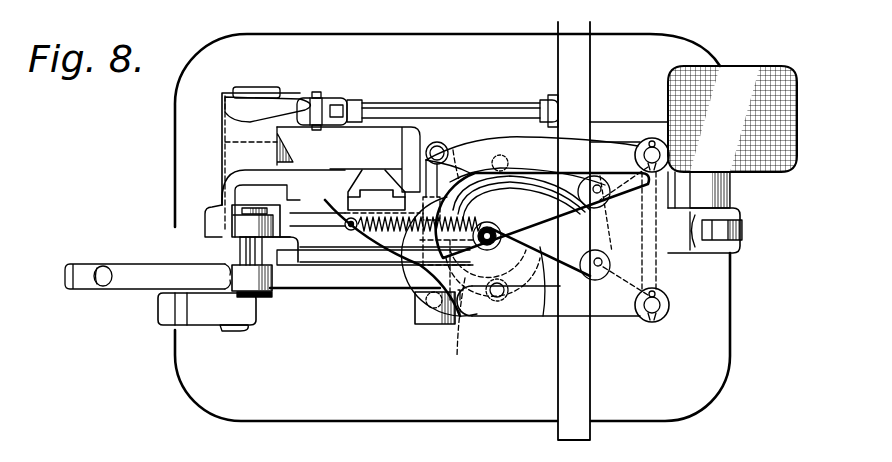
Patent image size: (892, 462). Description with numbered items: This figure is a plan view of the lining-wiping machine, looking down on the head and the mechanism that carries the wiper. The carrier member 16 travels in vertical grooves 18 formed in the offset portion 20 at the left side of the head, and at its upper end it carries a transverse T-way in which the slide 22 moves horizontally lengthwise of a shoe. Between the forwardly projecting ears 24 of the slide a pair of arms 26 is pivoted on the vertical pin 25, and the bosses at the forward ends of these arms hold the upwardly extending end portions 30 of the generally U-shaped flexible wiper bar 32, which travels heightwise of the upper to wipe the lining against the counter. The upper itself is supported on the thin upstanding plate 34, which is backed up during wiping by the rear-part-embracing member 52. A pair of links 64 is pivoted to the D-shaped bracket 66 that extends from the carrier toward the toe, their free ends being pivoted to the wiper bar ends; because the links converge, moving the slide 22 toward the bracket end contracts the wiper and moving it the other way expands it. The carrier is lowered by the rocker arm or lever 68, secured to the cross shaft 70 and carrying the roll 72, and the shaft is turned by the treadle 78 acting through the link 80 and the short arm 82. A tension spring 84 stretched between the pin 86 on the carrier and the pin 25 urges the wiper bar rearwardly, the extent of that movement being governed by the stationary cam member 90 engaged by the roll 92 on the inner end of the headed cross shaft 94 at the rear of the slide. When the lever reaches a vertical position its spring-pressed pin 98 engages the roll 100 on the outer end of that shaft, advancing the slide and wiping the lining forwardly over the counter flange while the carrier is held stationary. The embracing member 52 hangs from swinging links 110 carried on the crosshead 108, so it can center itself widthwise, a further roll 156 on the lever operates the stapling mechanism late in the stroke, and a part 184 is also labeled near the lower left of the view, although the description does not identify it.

The carrier member 16 is at (385, 246).
The vertical grooves 18 is at (388, 172).
The offset portion 20 is at (376, 200).
The slide 22 is at (330, 248).
The forwardly projecting ears 24 is at (505, 286).
The vertical pin 25 is at (458, 210).
The arms 26 is at (543, 252).
The upwardly extending end portions 30 is at (600, 182).
The flexible wiper member or bar 32 is at (548, 181).
The upstanding plate 34 is at (530, 190).
The rear-part-embracing member or shoe 52 is at (543, 302).
The links 64 is at (626, 170).
The D-shaped bracket 66 is at (594, 312).
The rocker arm or lever 68 is at (350, 290).
The cross shaft 70 is at (244, 90).
The roll 72 is at (458, 308).
The treadle 78 is at (732, 137).
The link 80 is at (402, 103).
The short arm 82 is at (256, 110).
The tension spring 84 is at (405, 235).
The pin 86 is at (340, 218).
The stationary vertical cam member 90 is at (219, 206).
The roll 92 is at (240, 222).
The headed cross shaft 94 is at (258, 298).
The spring-pressed pin 98 is at (103, 290).
The roll 100 is at (236, 272).
The crosshead 108 is at (402, 143).
The swinging links 110 is at (455, 148).
The roll 156 is at (437, 326).
The bracket 184 is at (208, 318).